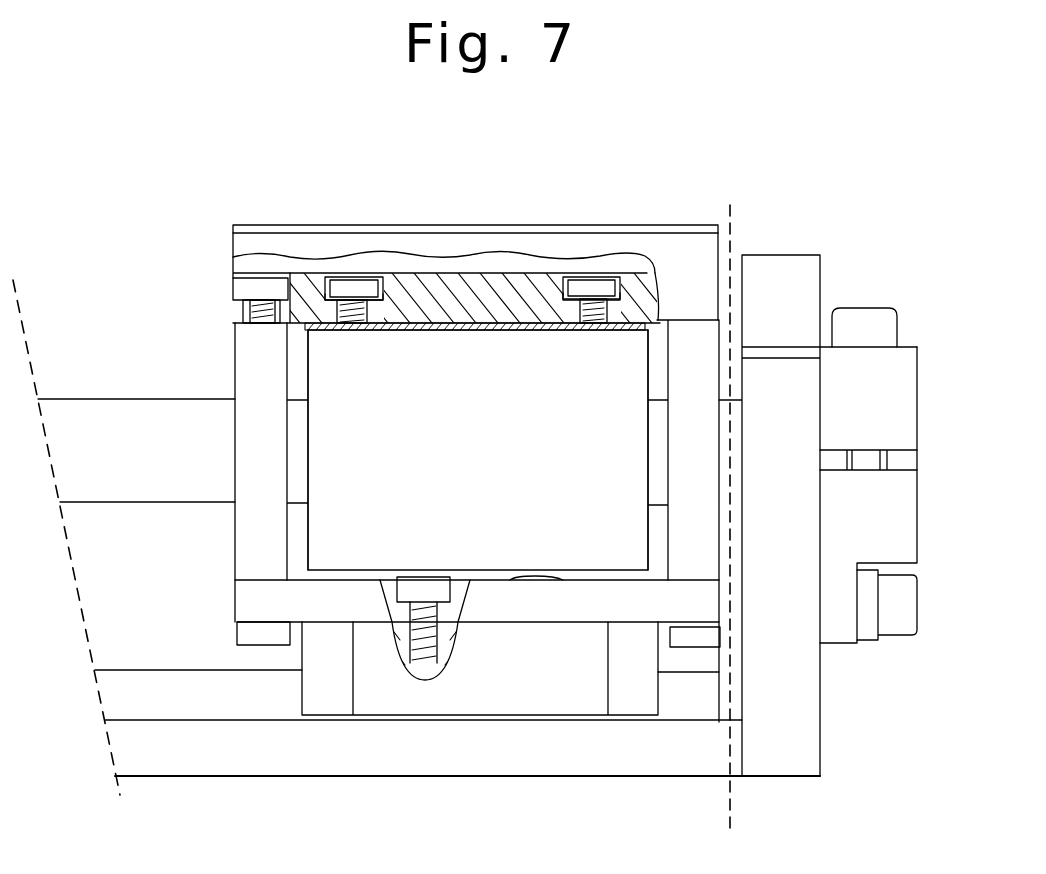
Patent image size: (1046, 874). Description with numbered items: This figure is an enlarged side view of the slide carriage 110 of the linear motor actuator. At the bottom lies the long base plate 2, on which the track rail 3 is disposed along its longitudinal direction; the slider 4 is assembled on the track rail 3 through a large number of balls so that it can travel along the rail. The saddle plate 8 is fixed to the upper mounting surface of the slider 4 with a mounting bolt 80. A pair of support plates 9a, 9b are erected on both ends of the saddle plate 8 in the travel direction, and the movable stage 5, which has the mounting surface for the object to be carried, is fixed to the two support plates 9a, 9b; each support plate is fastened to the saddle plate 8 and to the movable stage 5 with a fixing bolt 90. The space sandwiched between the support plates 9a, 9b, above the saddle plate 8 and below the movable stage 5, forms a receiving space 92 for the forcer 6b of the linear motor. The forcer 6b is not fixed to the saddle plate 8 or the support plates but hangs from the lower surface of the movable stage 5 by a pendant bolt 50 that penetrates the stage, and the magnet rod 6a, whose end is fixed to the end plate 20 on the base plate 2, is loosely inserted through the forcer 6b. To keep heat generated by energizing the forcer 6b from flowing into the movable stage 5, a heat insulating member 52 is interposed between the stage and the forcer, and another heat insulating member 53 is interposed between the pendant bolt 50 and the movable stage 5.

The slide carriage 110 is at (688, 212).
The movable stage 5 is at (277, 235).
The pendant bolt 50 is at (349, 280).
The forcer 6b is at (447, 358).
The heat insulating member 52 is at (521, 318).
The heat insulating member 53 is at (615, 300).
The fixing bolt 90 is at (241, 286).
The support plate 9b is at (243, 350).
The support plate 9a is at (690, 353).
The magnet rod 6a is at (118, 405).
The receiving space 92 is at (298, 549).
The end plate 20 is at (808, 712).
The track rail 3 is at (178, 706).
The base plate 2 is at (247, 757).
The slider 4 is at (398, 697).
The mounting bolt 80 is at (453, 667).
The saddle plate 8 is at (555, 634).